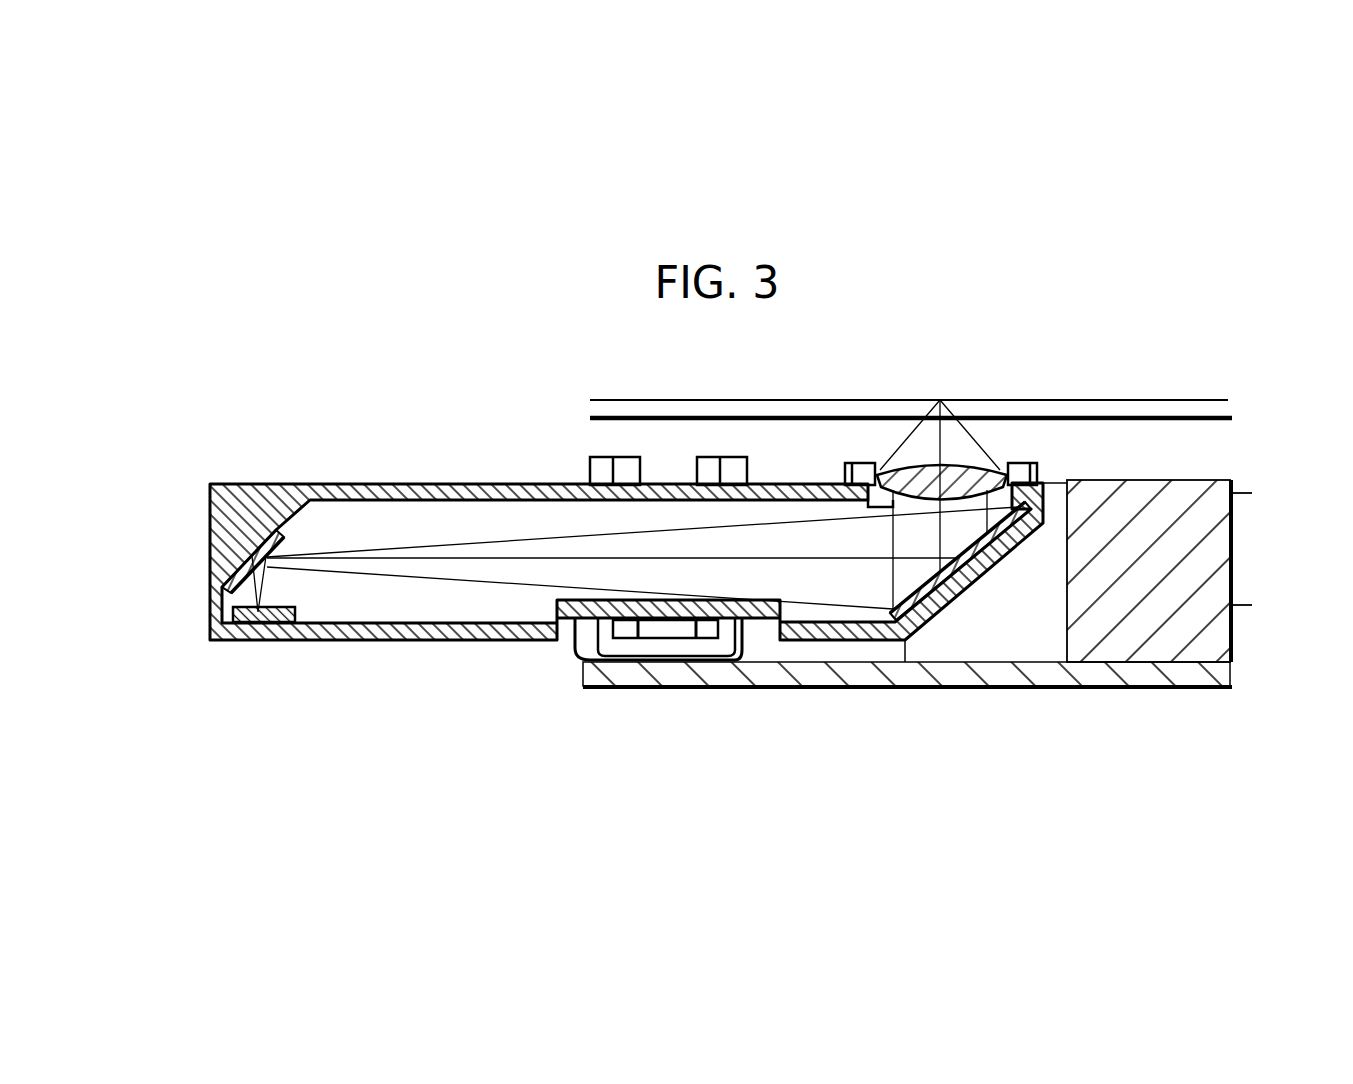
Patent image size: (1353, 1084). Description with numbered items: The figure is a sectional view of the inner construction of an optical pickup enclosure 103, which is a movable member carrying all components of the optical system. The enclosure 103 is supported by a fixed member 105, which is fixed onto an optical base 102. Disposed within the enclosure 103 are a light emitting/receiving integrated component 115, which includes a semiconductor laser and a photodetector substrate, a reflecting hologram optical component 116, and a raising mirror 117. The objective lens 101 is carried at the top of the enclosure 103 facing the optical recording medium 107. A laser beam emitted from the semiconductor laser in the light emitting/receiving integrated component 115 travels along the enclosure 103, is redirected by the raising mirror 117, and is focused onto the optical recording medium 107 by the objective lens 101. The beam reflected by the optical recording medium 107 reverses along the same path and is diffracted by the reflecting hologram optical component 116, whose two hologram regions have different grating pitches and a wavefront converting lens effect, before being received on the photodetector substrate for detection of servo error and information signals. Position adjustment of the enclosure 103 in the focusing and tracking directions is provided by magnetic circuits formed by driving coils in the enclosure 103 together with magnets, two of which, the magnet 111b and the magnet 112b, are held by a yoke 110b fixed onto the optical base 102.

The objective lens 101 is at (1035, 462).
The optical base 102 is at (1007, 690).
The enclosure 103 is at (397, 643).
The fixed member 105 is at (1233, 547).
The optical recording medium 107 is at (1100, 400).
The yoke 110b is at (584, 643).
The magnet 111b is at (627, 457).
The magnet 112b is at (710, 456).
The light emitting/receiving integrated component 115 is at (255, 640).
The reflecting hologram optical component 116 is at (210, 558).
The raising mirror 117 is at (898, 645).